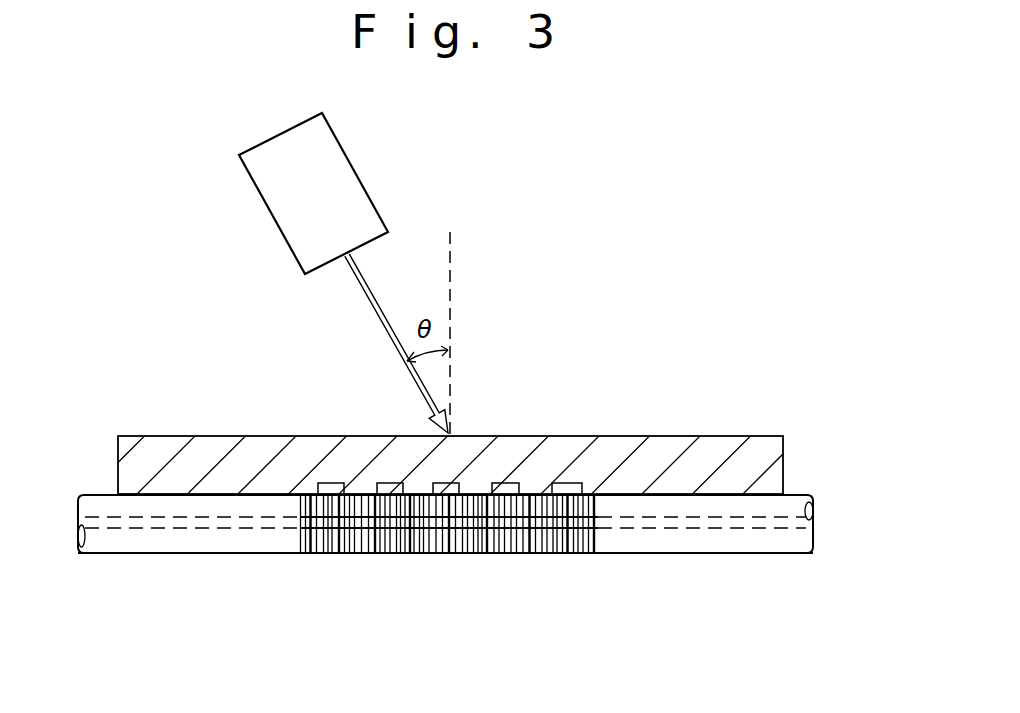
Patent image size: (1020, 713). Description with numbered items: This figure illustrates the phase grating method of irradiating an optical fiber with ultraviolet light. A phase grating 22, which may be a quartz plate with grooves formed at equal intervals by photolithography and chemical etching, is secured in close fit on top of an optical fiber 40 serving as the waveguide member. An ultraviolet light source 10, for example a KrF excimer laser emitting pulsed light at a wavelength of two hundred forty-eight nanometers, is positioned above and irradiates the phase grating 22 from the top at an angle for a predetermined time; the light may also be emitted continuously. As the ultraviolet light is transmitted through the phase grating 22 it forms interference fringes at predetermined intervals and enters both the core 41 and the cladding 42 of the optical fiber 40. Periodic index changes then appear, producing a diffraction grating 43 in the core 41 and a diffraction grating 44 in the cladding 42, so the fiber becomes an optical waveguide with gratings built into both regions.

The ultraviolet light source 10 is at (348, 160).
The phase grating 22 is at (765, 447).
The optical fiber 40 is at (677, 562).
The core 41 is at (182, 528).
The cladding 42 is at (118, 546).
The diffraction grating 43 is at (302, 522).
The diffraction grating 44 is at (295, 553).